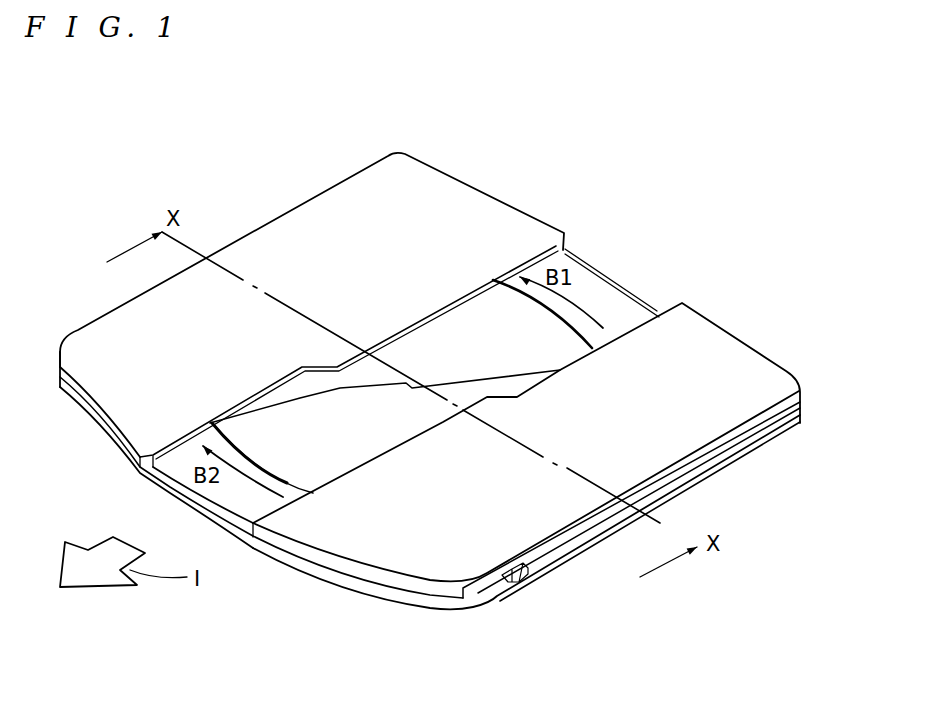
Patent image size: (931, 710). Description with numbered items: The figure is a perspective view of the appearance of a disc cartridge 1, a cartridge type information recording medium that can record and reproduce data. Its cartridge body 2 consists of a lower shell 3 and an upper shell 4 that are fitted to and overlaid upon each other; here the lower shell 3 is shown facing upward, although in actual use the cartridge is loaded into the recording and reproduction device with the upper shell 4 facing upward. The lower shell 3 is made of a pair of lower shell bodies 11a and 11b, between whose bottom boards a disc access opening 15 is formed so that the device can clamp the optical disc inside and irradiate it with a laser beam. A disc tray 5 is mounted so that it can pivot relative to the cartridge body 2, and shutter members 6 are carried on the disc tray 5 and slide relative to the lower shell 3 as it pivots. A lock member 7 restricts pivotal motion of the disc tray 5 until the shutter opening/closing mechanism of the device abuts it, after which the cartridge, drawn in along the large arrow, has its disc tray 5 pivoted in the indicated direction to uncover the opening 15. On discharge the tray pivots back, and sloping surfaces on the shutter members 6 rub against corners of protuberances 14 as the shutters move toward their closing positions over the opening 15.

The disc cartridge 1 is at (316, 134).
The cartridge body 2 is at (240, 195).
The lower shell 3 is at (700, 357).
The upper shell 4 is at (122, 467).
The disc tray 5 is at (590, 295).
The shutter members 6 is at (403, 363).
The lock member 7 is at (520, 580).
The lower shell body 11a is at (105, 438).
The lower shell body 11b is at (327, 573).
The protuberances 14 is at (212, 423).
The disc access opening 15 is at (478, 327).